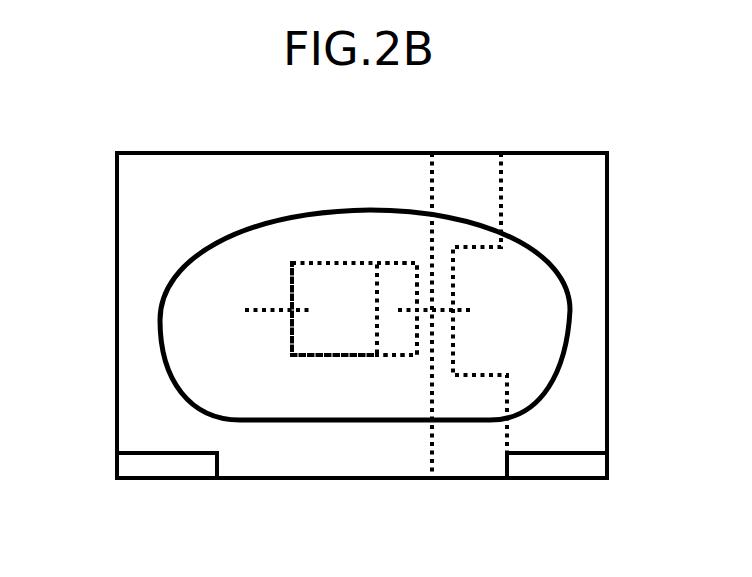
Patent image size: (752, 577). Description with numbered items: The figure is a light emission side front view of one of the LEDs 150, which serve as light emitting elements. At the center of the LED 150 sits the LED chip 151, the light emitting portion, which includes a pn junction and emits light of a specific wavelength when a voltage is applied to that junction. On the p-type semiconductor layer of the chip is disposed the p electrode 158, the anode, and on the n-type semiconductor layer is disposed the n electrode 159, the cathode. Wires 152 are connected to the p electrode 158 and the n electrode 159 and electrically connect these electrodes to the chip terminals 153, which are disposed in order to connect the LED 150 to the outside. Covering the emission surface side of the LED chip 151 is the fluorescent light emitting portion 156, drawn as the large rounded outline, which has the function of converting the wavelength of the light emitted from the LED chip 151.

The LED 150 is at (368, 485).
The LED chip 151 is at (353, 275).
The wires 152 is at (245, 310).
The chip terminals 153 is at (198, 465).
The fluorescent light emitting portion 156 is at (238, 260).
The p electrode 158 is at (404, 277).
The n electrode 159 is at (304, 278).